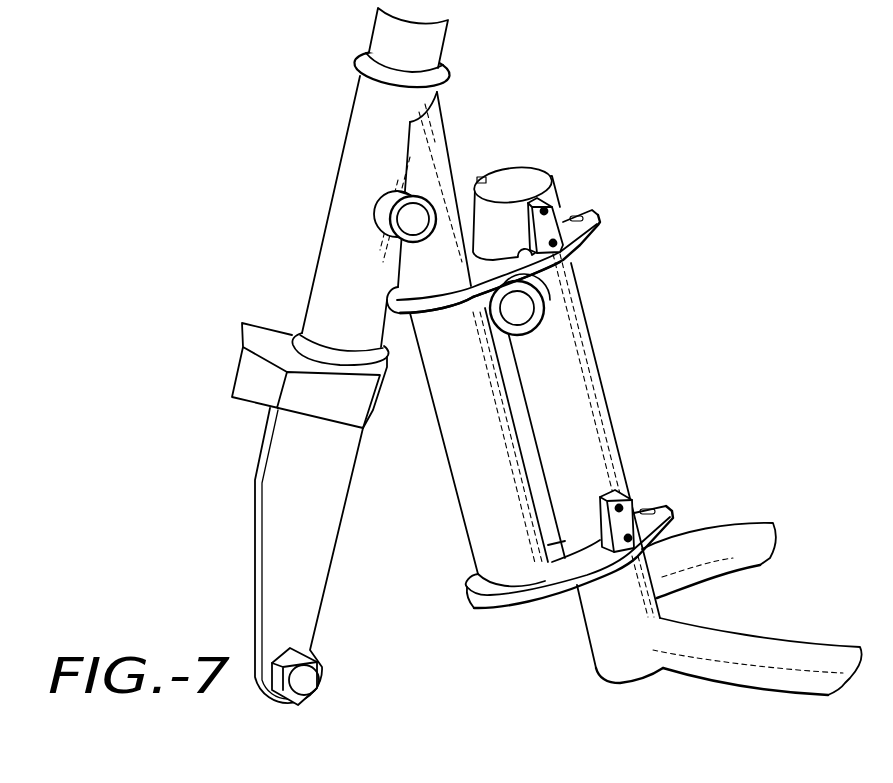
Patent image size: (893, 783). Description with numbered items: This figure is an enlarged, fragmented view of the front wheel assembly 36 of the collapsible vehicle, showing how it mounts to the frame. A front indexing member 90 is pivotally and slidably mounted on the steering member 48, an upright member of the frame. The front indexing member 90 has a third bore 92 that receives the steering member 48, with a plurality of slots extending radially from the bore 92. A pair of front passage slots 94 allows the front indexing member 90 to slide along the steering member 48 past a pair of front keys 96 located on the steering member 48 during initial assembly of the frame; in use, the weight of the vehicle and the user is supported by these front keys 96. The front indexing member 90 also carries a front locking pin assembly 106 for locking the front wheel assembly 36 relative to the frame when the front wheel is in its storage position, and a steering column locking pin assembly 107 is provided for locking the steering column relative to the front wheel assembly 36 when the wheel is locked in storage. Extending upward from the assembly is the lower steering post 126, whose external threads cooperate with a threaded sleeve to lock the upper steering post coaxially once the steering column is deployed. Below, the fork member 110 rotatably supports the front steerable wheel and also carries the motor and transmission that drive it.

The front wheel assembly 36 is at (294, 129).
The lower steering post 126 is at (430, 48).
The steering column locking pin assembly 107 is at (410, 213).
The fork member 110 is at (241, 280).
The front indexing member 90 is at (673, 185).
The steering member 48 is at (584, 472).
The front passage slots 94 is at (578, 214).
The third bore 92 is at (563, 259).
The front keys 96 is at (478, 182).
The front locking pin assembly 106 is at (518, 320).